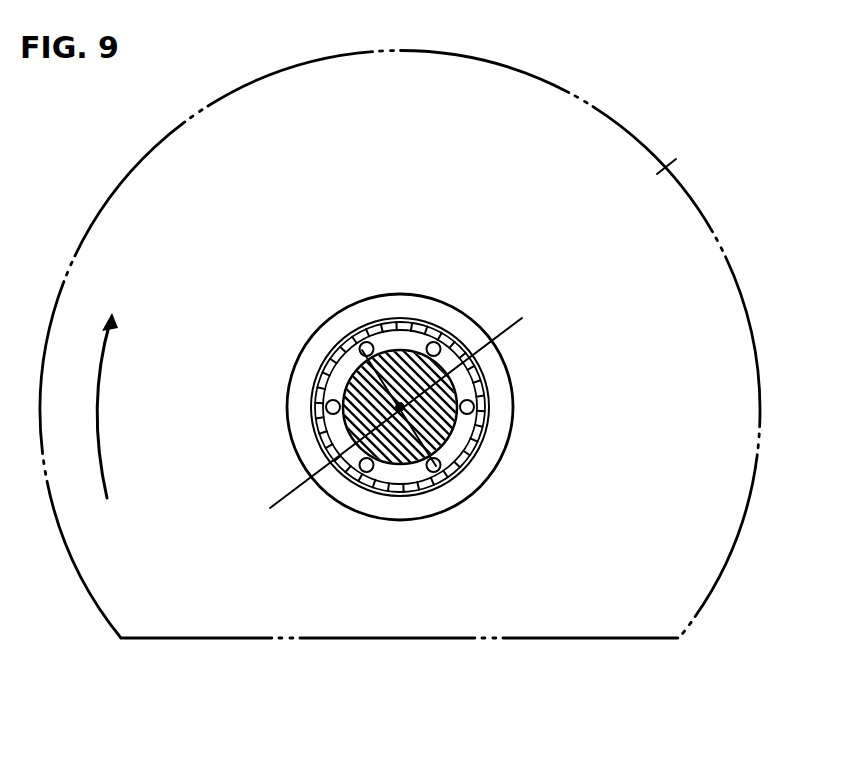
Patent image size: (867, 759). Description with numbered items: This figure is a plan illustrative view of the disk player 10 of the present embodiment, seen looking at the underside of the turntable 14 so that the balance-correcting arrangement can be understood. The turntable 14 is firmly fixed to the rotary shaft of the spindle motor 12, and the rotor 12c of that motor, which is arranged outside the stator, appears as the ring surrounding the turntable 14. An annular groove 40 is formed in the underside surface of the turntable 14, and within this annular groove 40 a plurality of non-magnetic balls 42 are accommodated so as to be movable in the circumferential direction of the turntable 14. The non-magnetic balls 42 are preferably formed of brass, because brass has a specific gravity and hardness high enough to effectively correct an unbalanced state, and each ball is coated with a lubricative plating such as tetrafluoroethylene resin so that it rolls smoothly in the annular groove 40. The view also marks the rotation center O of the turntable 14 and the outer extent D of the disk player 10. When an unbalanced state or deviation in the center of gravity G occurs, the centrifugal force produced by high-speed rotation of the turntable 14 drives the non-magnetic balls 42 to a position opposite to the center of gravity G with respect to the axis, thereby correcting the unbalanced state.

The disk player 10 is at (106, 127).
The tire outer diameter D is at (679, 160).
The spindle motor 12 is at (517, 422).
The rotor 12c is at (478, 470).
The annular groove 40 is at (340, 355).
The non-magnetic balls 42 is at (440, 342).
The turntable 14 is at (385, 347).
The center of gravity G is at (402, 406).
The rotation center O is at (400, 409).